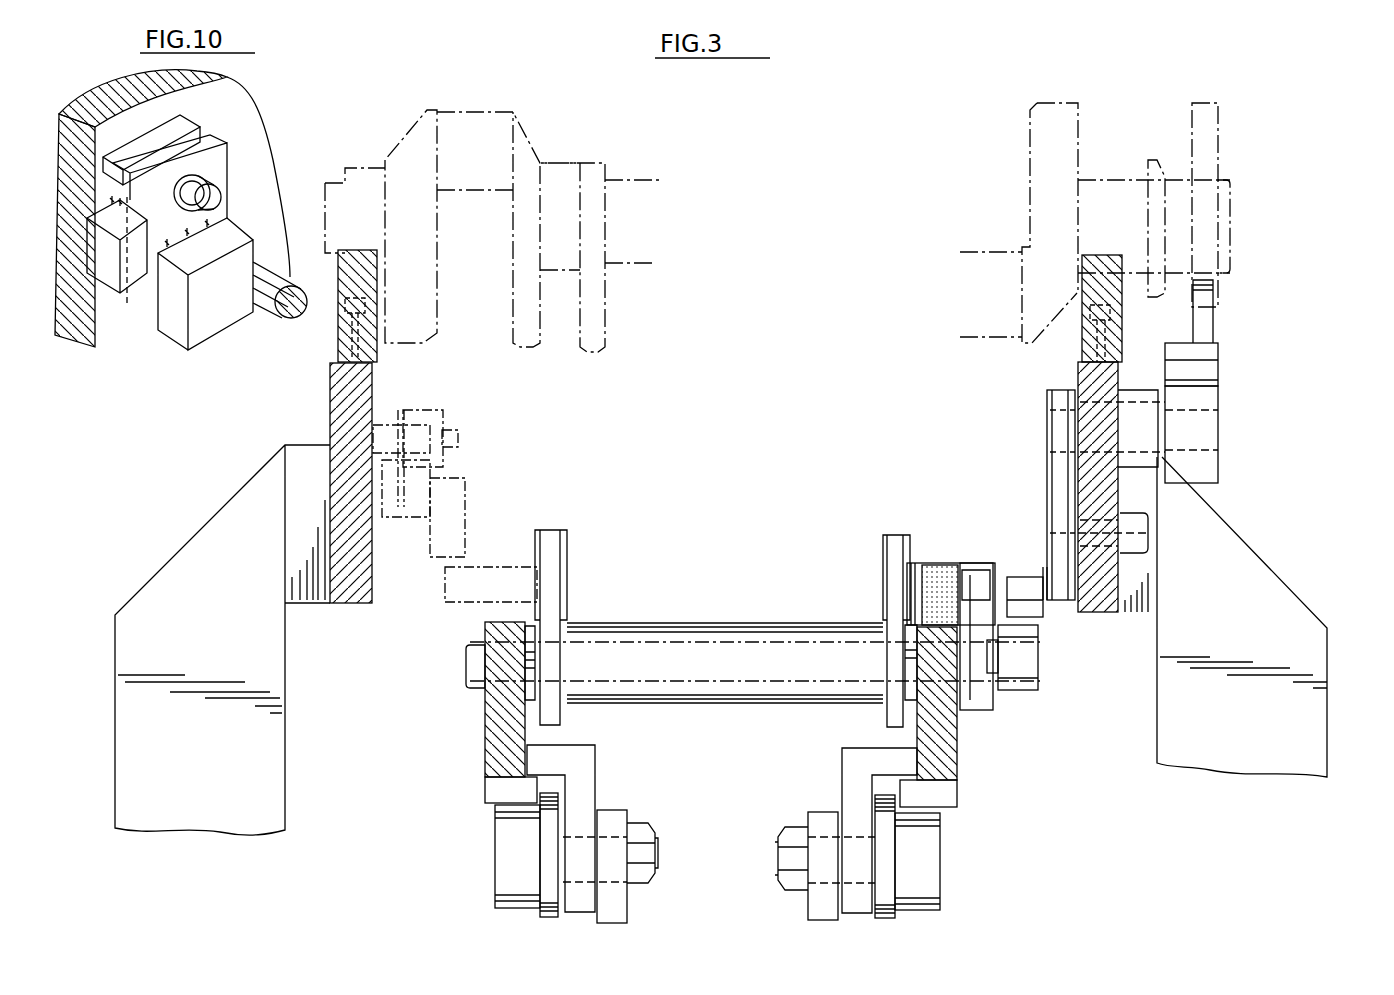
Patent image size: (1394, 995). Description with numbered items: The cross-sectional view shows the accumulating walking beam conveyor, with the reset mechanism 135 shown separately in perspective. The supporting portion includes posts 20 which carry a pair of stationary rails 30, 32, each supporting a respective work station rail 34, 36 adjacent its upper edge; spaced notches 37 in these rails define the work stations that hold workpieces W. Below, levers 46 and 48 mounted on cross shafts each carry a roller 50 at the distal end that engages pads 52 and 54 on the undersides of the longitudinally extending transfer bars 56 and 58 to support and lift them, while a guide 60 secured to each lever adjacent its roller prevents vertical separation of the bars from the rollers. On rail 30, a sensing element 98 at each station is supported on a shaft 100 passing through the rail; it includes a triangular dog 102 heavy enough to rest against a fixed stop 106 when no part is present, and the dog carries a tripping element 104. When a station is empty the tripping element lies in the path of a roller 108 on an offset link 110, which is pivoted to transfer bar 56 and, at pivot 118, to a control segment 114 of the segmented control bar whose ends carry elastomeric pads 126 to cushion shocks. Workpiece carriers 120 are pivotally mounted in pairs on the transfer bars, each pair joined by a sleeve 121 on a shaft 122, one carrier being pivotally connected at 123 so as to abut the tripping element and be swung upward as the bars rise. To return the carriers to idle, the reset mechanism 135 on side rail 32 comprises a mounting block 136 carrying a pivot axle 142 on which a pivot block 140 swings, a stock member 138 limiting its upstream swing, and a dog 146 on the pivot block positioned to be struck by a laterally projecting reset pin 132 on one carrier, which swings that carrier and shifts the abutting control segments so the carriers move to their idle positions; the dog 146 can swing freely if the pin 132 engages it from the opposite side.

In FIG. 3, the post 20 is at (217, 543).
In FIG. 3, the stationary rail 30 is at (1105, 495).
In FIG. 10, the stationary rail 32 is at (122, 332).
In FIG. 3, the stationary rail 32 is at (335, 413).
In FIG. 3, the work station rail 34 is at (1075, 345).
In FIG. 3, the work station rail 36 is at (373, 352).
In FIG. 3, the notch 37 is at (363, 248).
In FIG. 3, the lever 46 is at (820, 807).
In FIG. 3, the lever 48 is at (620, 905).
In FIG. 3, the roller 50 is at (507, 848).
In FIG. 3, the pad 52 is at (943, 793).
In FIG. 3, the pad 54 is at (492, 788).
In FIG. 3, the transfer bar 56 is at (943, 750).
In FIG. 3, the transfer bar 58 is at (492, 730).
In FIG. 3, the guide 60 is at (587, 758).
In FIG. 3, the sensing element 98 is at (1220, 372).
In FIG. 3, the shaft 100 is at (1217, 452).
In FIG. 3, the dog 102 is at (1058, 462).
In FIG. 3, the tripping element 104 is at (1042, 613).
In FIG. 3, the stop 106 is at (1073, 510).
In FIG. 3, the roller 108 is at (1012, 693).
In FIG. 3, the link 110 is at (988, 712).
In FIG. 3, the control segment 114 is at (940, 600).
In FIG. 3, the pivot 118 is at (968, 560).
In FIG. 3, the workpiece carrier 120 is at (548, 545).
In FIG. 3, the sleeve 121 is at (733, 633).
In FIG. 3, the shaft 122 is at (668, 642).
In FIG. 3, the pivotal connection 123 is at (893, 588).
In FIG. 3, the elastomeric pad 126 is at (1038, 658).
In FIG. 10, the reset pin 132 is at (297, 315).
In FIG. 3, the reset pin 132 is at (440, 587).
In FIG. 10, the reset mechanism 135 is at (197, 120).
In FIG. 3, the reset mechanism 135 is at (450, 468).
In FIG. 10, the mounting block 136 is at (135, 147).
In FIG. 10, the stock member 138 is at (113, 280).
In FIG. 10, the pivot block 140 is at (210, 145).
In FIG. 10, the pivot axle 142 is at (213, 202).
In FIG. 10, the dog 146 is at (210, 327).
In FIG. 3, the dog 146 is at (455, 503).
In FIG. 3, the workpiece W is at (533, 140).